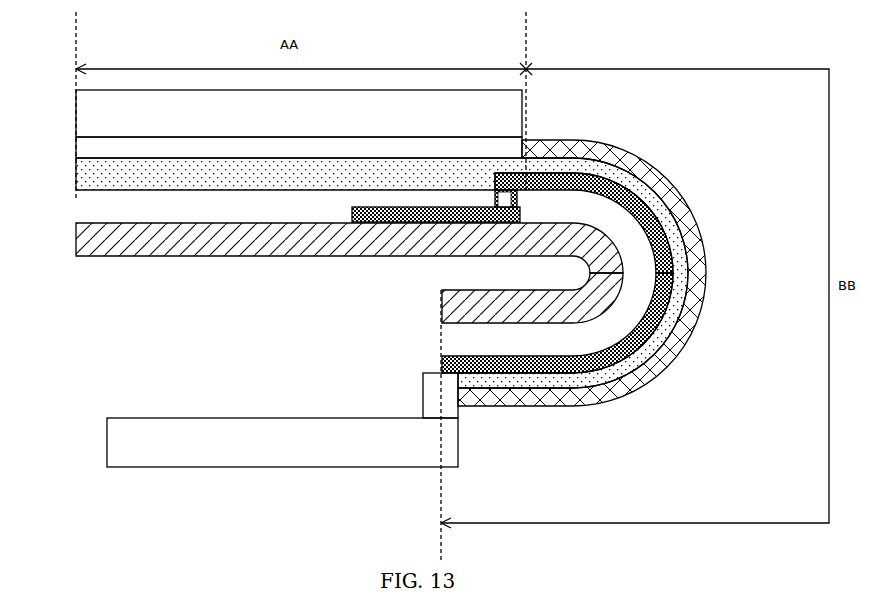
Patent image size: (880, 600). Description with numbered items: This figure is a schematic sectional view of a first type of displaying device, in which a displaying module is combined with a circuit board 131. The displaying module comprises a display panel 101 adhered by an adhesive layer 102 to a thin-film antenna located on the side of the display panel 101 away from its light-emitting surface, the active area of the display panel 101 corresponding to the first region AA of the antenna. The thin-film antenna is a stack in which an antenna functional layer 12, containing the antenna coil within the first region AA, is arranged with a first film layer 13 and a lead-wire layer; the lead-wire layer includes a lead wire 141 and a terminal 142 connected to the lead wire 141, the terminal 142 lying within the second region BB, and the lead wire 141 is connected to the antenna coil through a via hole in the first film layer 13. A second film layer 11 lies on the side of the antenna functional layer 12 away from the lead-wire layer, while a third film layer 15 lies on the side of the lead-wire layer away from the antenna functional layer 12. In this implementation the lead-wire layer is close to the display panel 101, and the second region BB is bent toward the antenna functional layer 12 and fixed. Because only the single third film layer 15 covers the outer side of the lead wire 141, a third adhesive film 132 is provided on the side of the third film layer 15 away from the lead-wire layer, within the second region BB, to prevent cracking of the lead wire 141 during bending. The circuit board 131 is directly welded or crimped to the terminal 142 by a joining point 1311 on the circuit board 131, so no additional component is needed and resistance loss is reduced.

The display panel 101 is at (92, 115).
The adhesive layer 102 is at (98, 148).
The third adhesive film 132 is at (627, 157).
The third film layer 15 is at (683, 283).
The lead wire 141 is at (580, 185).
The terminal 142 is at (447, 363).
The antenna functional layer 12 is at (490, 214).
The second film layer 11 is at (560, 244).
The first film layer 13 is at (613, 322).
The joining point 1311 is at (447, 400).
The circuit board 131 is at (358, 442).